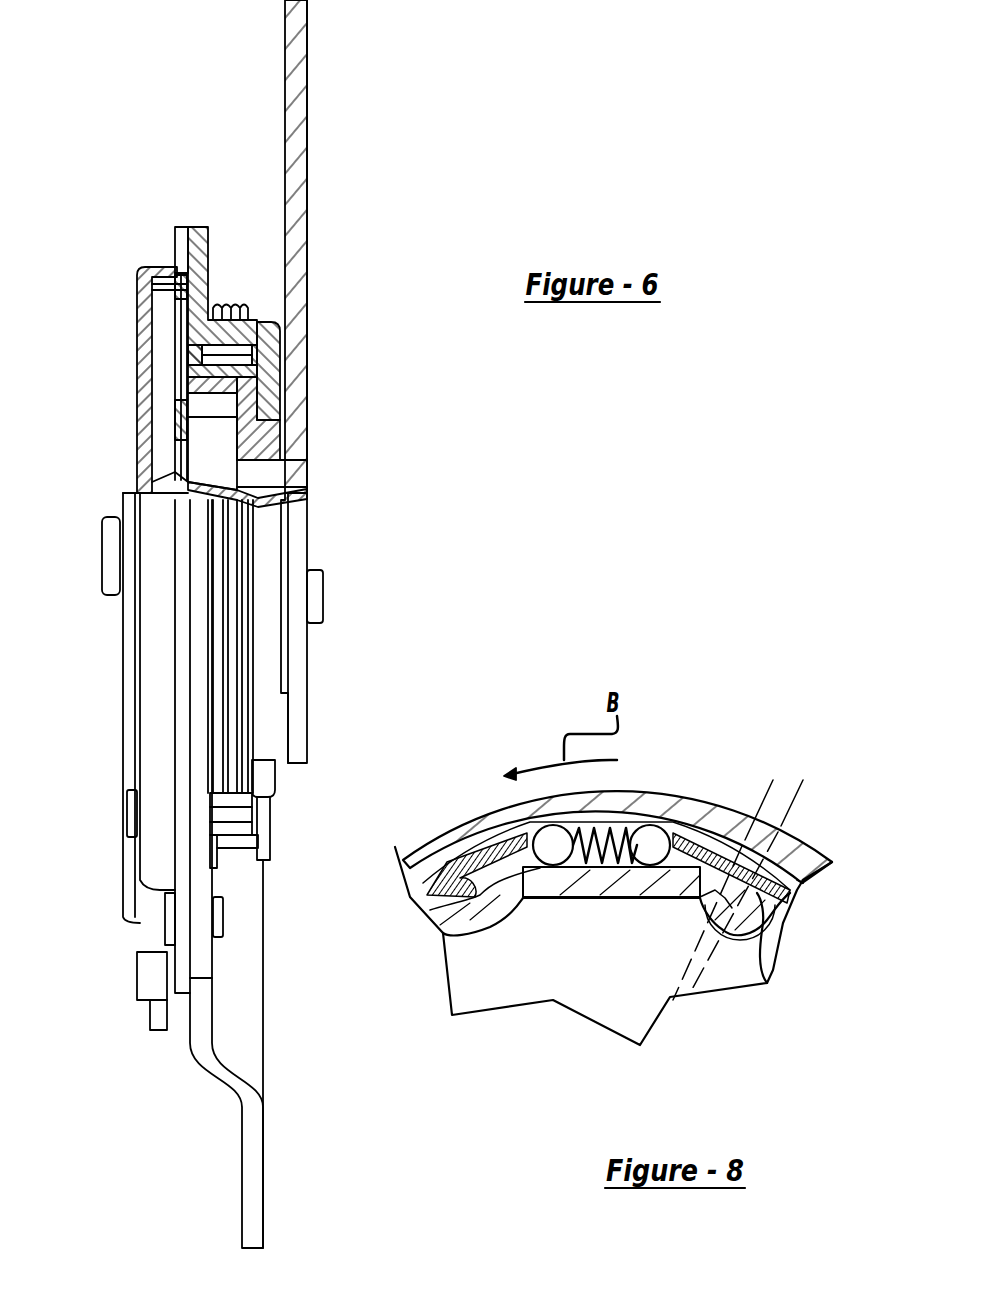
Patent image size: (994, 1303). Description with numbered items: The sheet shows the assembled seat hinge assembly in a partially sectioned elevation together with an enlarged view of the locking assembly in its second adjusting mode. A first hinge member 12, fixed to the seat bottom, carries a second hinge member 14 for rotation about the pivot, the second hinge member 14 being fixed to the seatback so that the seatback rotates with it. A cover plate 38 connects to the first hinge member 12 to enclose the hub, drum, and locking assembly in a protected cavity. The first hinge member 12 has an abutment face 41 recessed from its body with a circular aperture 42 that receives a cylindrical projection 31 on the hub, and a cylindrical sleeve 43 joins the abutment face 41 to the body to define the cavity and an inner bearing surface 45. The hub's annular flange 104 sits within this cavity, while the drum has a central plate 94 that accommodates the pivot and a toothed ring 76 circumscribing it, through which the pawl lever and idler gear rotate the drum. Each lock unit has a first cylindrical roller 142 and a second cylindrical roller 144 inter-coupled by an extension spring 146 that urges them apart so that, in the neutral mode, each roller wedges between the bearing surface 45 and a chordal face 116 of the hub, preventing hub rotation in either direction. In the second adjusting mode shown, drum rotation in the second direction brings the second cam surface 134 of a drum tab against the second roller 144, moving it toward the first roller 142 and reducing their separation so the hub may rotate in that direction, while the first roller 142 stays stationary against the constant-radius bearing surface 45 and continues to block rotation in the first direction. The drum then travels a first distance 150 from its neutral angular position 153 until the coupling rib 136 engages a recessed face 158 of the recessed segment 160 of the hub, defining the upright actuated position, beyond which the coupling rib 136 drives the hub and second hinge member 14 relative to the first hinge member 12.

In FIG. 6, the second hinge member 14 is at (307, 52).
In FIG. 6, the first hinge member 12 is at (213, 240).
In FIG. 6, the cover plate 38 is at (148, 268).
In FIG. 6, the cylindrical sleeve 43 is at (229, 330).
In FIG. 6, the inner bearing surface 45 is at (248, 335).
In FIG. 6, the abutment face 41 is at (258, 365).
In FIG. 6, the circular aperture 42 is at (282, 431).
In FIG. 6, the cylindrical projection 31 is at (272, 447).
In FIG. 6, the toothed ring 76 is at (180, 284).
In FIG. 6, the first cylindrical roller 142 is at (213, 350).
In FIG. 8, the first cylindrical roller 142 is at (553, 847).
In FIG. 6, the extension spring 146 is at (213, 370).
In FIG. 6, the chordal face 116 is at (213, 393).
In FIG. 6, the annular flange 104 is at (200, 394).
In FIG. 6, the central plate 94 is at (183, 447).
In FIG. 8, the second cam surface 134 is at (673, 858).
In FIG. 8, the first distance 150 is at (840, 810).
In FIG. 8, the neutral angular position 153 is at (805, 798).
In FIG. 8, the second cylindrical roller 144 is at (647, 847).
In FIG. 8, the recessed face 158 is at (730, 873).
In FIG. 8, the coupling rib 136 is at (767, 985).
In FIG. 8, the recessed segment 160 is at (757, 907).